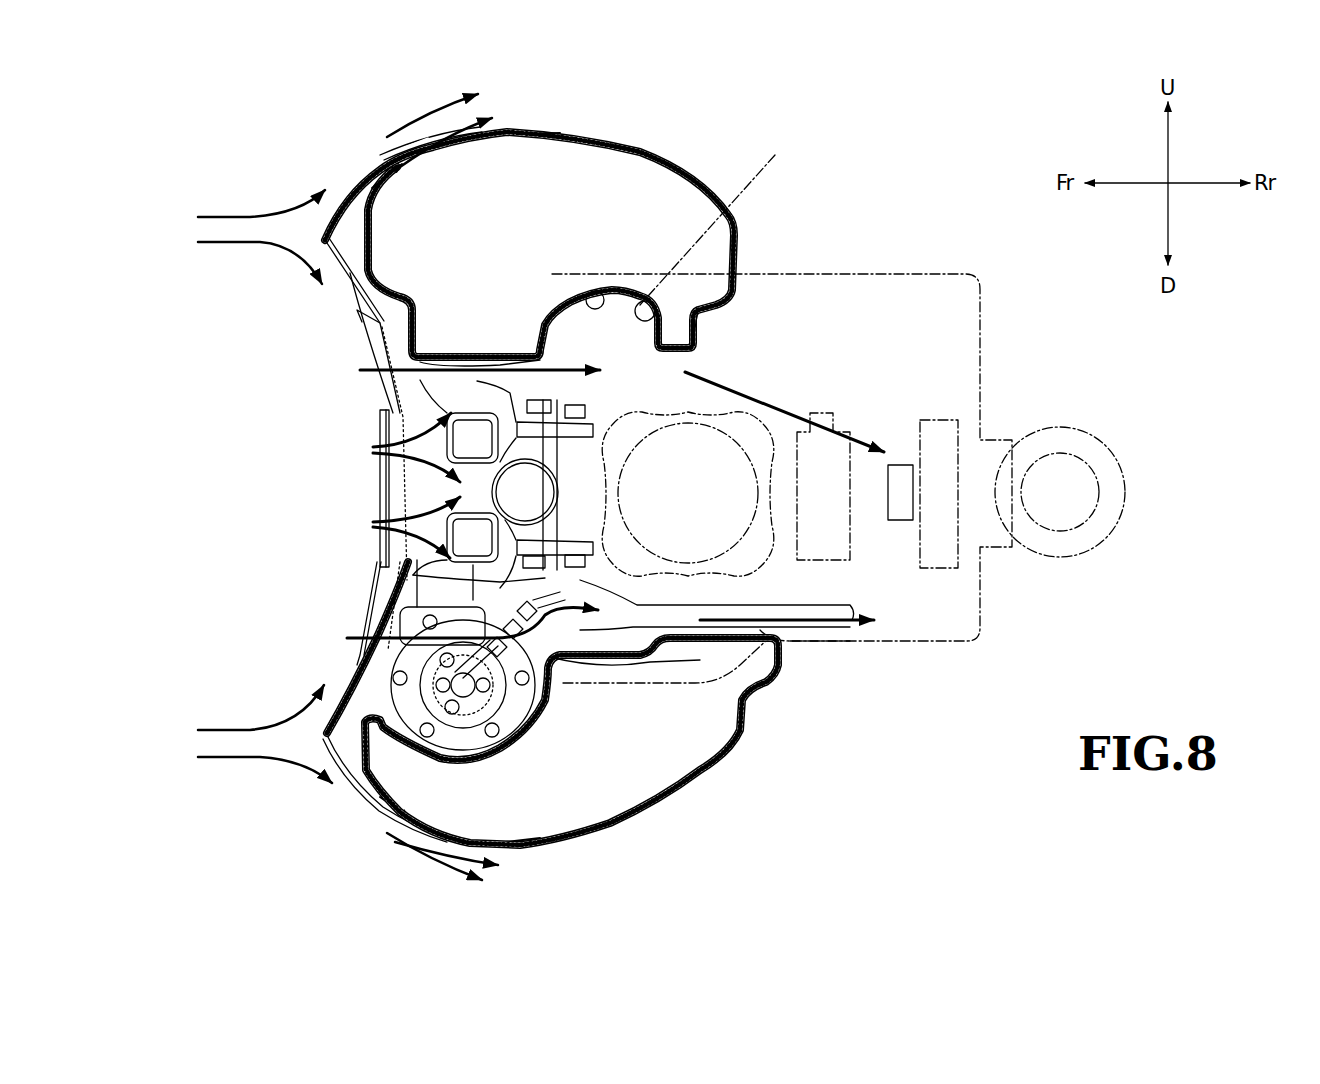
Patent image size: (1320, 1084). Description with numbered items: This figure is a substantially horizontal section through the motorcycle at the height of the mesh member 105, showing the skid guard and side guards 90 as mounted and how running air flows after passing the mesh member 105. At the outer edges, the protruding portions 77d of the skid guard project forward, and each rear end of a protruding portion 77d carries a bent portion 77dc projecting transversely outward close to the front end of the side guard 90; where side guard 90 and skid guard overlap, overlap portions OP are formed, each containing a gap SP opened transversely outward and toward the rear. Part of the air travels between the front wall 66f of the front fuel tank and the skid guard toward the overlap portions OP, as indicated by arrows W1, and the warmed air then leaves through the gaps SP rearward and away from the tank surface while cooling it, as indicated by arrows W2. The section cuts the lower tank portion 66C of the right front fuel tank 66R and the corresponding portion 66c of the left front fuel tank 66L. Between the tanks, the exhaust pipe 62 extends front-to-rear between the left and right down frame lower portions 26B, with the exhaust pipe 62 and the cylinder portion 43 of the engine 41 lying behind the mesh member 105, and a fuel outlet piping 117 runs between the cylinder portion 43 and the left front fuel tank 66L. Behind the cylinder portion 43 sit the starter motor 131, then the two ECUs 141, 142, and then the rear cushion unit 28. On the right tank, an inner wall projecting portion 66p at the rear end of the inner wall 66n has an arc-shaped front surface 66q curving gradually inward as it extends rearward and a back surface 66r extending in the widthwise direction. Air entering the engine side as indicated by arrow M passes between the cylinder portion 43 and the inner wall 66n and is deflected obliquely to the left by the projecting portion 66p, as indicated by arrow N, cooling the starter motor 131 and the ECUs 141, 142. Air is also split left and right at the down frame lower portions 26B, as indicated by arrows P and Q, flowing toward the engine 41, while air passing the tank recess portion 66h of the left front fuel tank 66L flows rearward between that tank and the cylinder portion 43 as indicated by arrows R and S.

The bent portion 77dc is at (397, 143).
The overlap portions OP is at (413, 139).
The arrows W1 is at (378, 168).
The arrows W2 is at (470, 137).
The gap SP is at (427, 160).
The side guard 90 is at (541, 130).
The lower tank portion 66C is at (552, 207).
The inner wall 66n is at (611, 277).
The right front fuel tank 66R is at (706, 176).
The engine 41 is at (718, 211).
The front surface 66q is at (719, 272).
The inner wall projecting portion 66p is at (703, 316).
The back surface 66r is at (700, 343).
The protruding portions 77d is at (326, 241).
The front wall 66f is at (350, 273).
The down frame lower portions 26B is at (447, 360).
The mesh member 105 is at (380, 410).
The exhaust pipe 62 is at (443, 480).
The arrow M is at (480, 356).
The arrow N is at (773, 404).
The arrow P is at (409, 487).
The arrow Q is at (405, 486).
The arrow R is at (459, 629).
The arrow S is at (805, 620).
The cylinder portion 43 is at (763, 413).
The ECU 142 is at (946, 419).
The ECU 141 is at (902, 464).
The starter motor 131 is at (833, 563).
The rear cushion unit 28 is at (1053, 558).
The fuel outlet piping 117 is at (768, 680).
The left front fuel tank 66L is at (730, 767).
The tank recess portion 66h is at (647, 760).
The bottom wall 66c is at (543, 780).